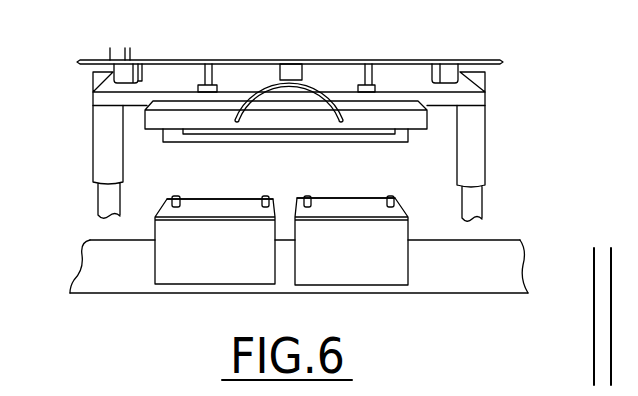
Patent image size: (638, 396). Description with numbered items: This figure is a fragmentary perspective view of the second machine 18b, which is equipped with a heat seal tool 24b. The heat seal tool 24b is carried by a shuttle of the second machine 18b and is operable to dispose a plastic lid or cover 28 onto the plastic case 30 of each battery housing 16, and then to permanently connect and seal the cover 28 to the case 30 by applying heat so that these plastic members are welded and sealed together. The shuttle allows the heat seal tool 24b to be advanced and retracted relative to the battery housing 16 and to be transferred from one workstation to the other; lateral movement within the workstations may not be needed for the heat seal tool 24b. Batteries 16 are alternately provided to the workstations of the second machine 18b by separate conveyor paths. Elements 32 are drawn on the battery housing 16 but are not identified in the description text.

The rack frame assembly 18b is at (530, 91).
The shelf 24b is at (398, 117).
The battery 16 is at (185, 282).
The battery top 28 is at (210, 207).
The battery terminal 32 is at (175, 198).
The platform 30 is at (240, 277).